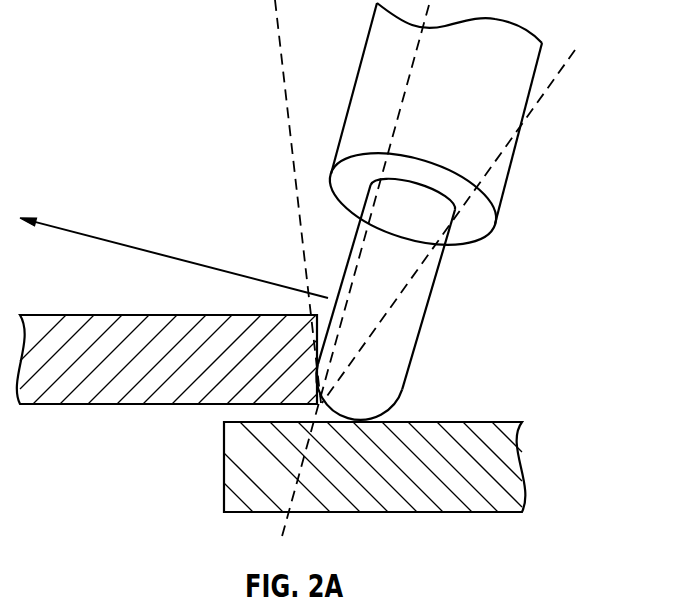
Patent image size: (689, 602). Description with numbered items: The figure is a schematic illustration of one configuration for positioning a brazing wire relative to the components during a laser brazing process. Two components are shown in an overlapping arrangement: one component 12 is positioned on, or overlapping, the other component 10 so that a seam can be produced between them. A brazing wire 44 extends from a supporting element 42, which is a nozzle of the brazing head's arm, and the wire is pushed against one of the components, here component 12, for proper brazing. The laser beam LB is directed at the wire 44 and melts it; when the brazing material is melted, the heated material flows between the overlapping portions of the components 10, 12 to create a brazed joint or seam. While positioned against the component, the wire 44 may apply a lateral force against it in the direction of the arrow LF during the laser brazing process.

The component 10 is at (223, 470).
The component 12 is at (103, 337).
The supporting element 42 is at (515, 147).
The brazing wire 44 is at (425, 323).
The laser beam LB is at (278, 38).
The lateral force direction arrow LF is at (112, 242).